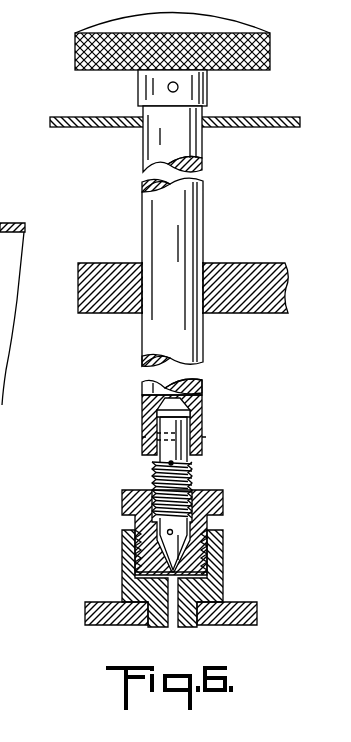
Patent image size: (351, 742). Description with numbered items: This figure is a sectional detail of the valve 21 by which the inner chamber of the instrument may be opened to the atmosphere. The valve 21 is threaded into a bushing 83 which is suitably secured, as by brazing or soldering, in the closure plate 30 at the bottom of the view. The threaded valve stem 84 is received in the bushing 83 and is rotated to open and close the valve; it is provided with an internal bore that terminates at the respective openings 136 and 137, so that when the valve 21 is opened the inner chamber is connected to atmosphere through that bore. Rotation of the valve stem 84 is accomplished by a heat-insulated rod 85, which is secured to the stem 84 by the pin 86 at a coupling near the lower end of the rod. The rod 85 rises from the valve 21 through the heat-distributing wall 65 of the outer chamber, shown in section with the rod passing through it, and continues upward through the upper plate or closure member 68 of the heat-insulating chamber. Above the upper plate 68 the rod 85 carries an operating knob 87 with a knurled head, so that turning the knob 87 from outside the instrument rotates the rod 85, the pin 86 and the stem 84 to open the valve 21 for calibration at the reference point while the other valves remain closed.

The operating knob 87 is at (75, 47).
The upper closure member 68 is at (65, 127).
The heat-insulated rod 85 is at (201, 171).
The heat-distributing wall 65 is at (121, 252).
The pin 86 is at (147, 437).
The valve stem 84 is at (160, 460).
The opening 137 is at (187, 463).
The valve 21 is at (100, 532).
The opening 136 is at (173, 532).
The bushing 83 is at (222, 575).
The closure plate 30 is at (100, 601).